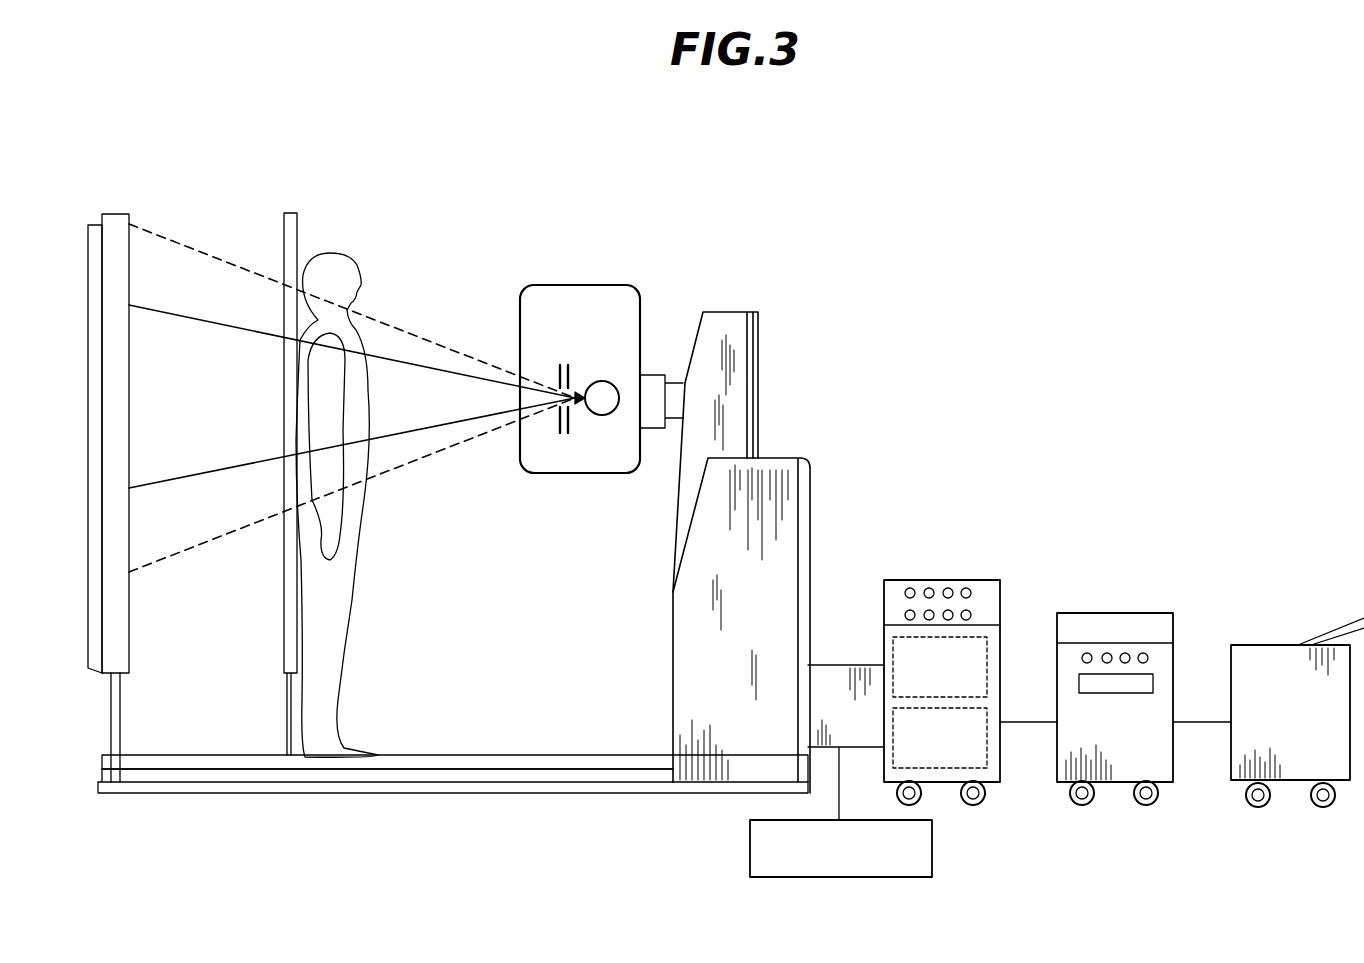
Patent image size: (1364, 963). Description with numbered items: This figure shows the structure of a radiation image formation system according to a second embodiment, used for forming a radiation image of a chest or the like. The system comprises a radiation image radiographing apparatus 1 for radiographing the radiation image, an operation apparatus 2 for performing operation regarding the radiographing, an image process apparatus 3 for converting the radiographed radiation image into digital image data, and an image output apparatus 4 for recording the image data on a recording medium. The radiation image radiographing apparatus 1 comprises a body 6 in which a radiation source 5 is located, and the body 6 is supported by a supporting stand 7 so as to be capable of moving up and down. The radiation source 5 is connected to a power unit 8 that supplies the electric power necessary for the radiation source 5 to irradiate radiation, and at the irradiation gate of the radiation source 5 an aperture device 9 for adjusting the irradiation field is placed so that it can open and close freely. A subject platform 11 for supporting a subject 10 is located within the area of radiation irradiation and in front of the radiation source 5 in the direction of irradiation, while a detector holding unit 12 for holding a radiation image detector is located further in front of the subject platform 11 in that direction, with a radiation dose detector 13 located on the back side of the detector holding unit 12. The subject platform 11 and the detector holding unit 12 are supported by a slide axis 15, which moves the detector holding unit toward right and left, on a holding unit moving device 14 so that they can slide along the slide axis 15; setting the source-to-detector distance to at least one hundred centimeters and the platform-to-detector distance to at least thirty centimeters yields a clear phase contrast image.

The radiation image radiographing apparatus 1 is at (493, 196).
The operation apparatus 2 is at (942, 565).
The image process apparatus 3 is at (1109, 600).
The image output apparatus 4 is at (1297, 615).
The radiation source 5 is at (612, 420).
The body 6 is at (600, 285).
The supporting stand 7 is at (783, 458).
The power unit 8 is at (932, 845).
The aperture device 9 is at (558, 420).
The subject 10 is at (330, 252).
The subject platform 11 is at (289, 213).
The detector holding unit 12 is at (116, 227).
The radiation dose detector 13 is at (94, 226).
The holding unit moving device 14 is at (578, 786).
The slide axis 15 is at (492, 777).